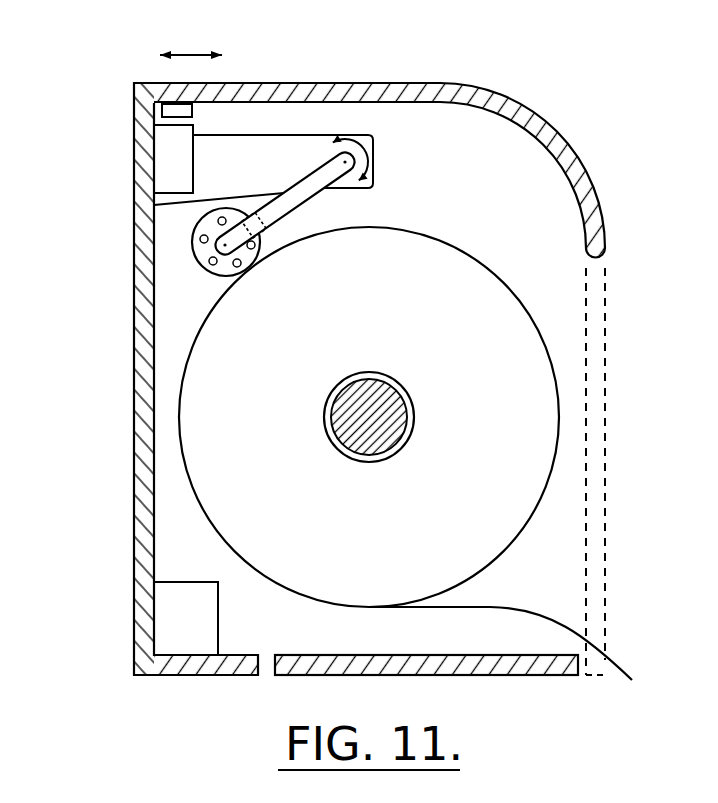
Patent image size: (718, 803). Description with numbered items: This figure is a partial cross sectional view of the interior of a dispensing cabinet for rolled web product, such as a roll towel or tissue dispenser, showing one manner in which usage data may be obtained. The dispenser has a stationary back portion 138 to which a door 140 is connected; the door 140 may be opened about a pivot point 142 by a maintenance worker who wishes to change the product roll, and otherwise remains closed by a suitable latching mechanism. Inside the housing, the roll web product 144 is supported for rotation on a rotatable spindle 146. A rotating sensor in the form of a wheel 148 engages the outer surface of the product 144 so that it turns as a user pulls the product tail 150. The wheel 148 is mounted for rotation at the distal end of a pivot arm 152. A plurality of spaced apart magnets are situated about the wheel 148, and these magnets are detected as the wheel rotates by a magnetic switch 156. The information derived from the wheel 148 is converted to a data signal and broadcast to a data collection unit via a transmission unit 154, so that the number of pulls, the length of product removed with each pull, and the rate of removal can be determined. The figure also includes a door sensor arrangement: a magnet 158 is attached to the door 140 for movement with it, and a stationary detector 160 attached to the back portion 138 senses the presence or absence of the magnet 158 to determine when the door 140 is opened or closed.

The stationary back portion 138 is at (137, 382).
The door 140 is at (379, 360).
The pivot point 142 is at (292, 665).
The roll web product 144 is at (369, 407).
The rotatable spindle 146 is at (372, 442).
The wheel 148 is at (193, 257).
The product tail 150 is at (625, 668).
The pivot arm 152 is at (302, 198).
The transmission unit 154 is at (218, 613).
The magnetic switch 156 is at (258, 232).
The magnet 158 is at (193, 109).
The stationary detector 160 is at (195, 155).